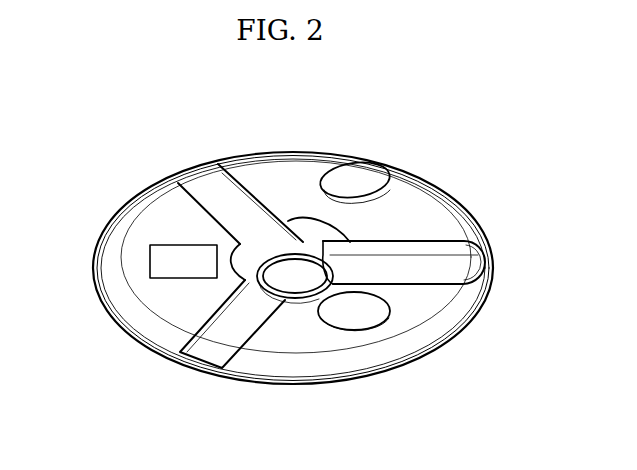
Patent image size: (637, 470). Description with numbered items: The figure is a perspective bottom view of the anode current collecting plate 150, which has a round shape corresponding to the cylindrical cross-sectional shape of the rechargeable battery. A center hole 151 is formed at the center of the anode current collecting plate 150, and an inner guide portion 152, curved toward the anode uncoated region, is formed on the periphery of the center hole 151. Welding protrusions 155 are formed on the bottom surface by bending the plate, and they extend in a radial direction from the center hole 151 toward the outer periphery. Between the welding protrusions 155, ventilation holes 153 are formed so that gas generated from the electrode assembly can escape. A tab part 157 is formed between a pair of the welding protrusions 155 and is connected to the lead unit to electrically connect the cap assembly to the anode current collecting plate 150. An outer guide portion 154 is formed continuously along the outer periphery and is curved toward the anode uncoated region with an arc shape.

The anode current collecting plate 150 is at (498, 258).
The center hole 151 is at (302, 284).
The inner guide portion 152 is at (307, 237).
The ventilation holes 153 is at (416, 207).
The outer guide portion 154 is at (463, 301).
The welding protrusions 155 is at (428, 246).
The tab part 157 is at (163, 267).